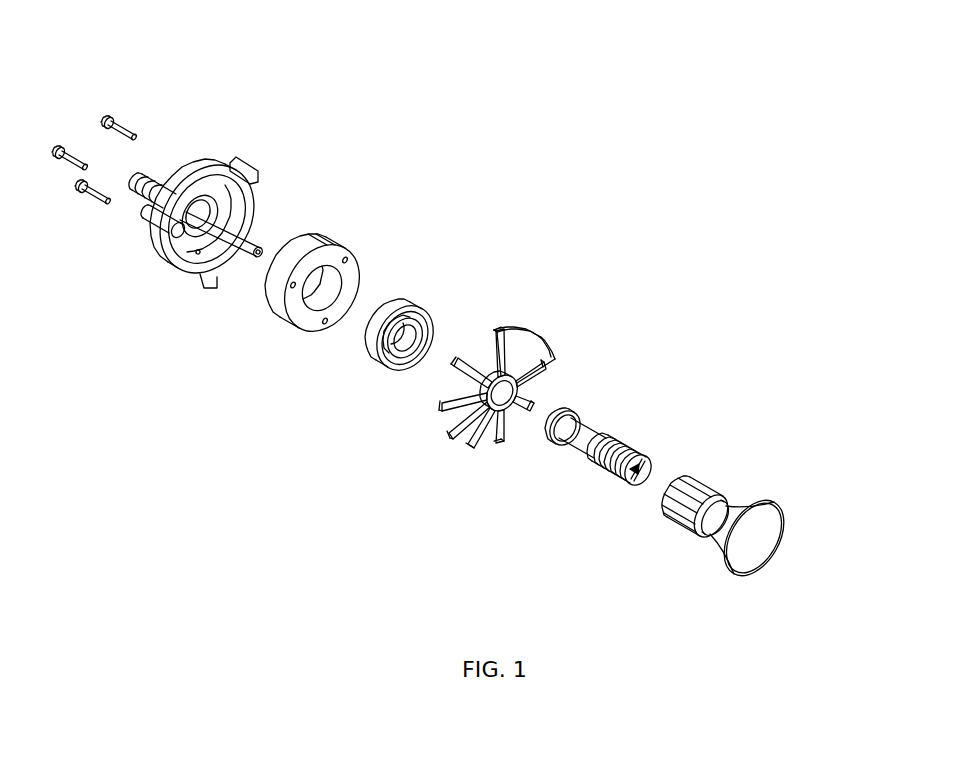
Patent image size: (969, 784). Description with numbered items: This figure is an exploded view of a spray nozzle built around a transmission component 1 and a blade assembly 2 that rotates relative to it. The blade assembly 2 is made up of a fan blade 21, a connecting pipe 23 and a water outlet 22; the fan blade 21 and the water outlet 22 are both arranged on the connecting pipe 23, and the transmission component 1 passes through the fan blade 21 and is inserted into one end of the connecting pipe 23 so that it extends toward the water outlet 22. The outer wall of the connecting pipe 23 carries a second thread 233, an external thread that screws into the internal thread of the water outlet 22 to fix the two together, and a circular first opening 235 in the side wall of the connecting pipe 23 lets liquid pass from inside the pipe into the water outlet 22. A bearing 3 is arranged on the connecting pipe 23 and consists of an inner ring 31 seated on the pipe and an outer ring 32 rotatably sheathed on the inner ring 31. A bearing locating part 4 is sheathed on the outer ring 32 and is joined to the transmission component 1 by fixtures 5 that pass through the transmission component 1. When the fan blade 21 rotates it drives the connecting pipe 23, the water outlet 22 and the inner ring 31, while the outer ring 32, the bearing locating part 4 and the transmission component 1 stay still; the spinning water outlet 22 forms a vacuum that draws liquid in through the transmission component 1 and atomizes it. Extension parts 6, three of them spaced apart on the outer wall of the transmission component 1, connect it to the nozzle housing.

The transmission component 1 is at (242, 223).
The blade assembly 2 is at (653, 405).
The bearing 3 is at (395, 329).
The bearing locating part 4 is at (340, 243).
The fixture 5 is at (130, 127).
The extension part 6 is at (153, 248).
The fan blade 21 is at (530, 340).
The water outlet 22 is at (761, 462).
The connecting pipe 23 is at (614, 440).
The inner ring 31 is at (398, 367).
The outer ring 32 is at (383, 340).
The second thread 233 is at (593, 463).
The first opening 235 is at (625, 475).